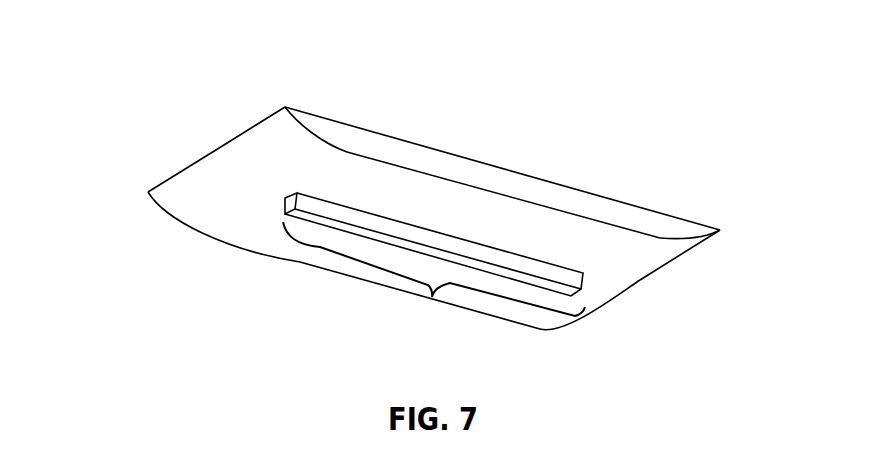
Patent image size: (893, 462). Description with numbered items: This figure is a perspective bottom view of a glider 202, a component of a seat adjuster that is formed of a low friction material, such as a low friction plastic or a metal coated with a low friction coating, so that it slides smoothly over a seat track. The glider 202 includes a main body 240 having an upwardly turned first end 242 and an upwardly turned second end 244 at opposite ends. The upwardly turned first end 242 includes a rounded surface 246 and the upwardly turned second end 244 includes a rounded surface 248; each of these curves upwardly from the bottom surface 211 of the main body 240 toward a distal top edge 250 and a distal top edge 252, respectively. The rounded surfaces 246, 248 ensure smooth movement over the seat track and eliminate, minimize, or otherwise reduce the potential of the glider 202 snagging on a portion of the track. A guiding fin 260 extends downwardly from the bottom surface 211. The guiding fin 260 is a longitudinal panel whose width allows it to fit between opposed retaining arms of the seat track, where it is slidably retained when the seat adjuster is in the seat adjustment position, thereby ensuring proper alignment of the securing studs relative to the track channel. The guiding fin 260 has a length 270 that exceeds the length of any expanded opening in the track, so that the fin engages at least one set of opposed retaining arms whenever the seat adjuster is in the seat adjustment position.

The glider 202 is at (417, 200).
The bottom surface 211 is at (597, 253).
The main body 240 is at (450, 154).
The upwardly turned first end 242 is at (232, 138).
The upwardly turned second end 244 is at (647, 281).
The rounded surface 246 is at (193, 202).
The rounded surface 248 is at (603, 290).
The distal top edge 250 is at (188, 165).
The distal top edge 252 is at (720, 230).
The guiding fin 260 is at (274, 214).
The length 270 is at (432, 297).